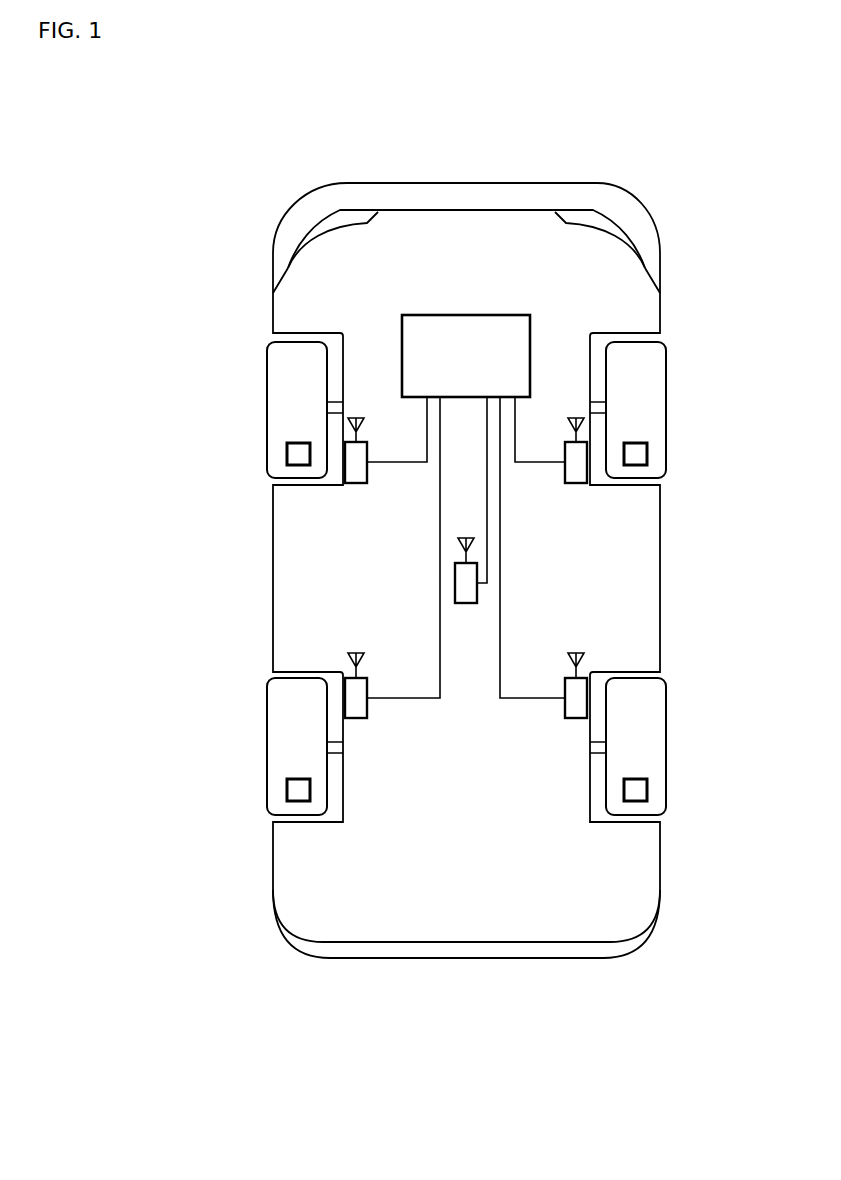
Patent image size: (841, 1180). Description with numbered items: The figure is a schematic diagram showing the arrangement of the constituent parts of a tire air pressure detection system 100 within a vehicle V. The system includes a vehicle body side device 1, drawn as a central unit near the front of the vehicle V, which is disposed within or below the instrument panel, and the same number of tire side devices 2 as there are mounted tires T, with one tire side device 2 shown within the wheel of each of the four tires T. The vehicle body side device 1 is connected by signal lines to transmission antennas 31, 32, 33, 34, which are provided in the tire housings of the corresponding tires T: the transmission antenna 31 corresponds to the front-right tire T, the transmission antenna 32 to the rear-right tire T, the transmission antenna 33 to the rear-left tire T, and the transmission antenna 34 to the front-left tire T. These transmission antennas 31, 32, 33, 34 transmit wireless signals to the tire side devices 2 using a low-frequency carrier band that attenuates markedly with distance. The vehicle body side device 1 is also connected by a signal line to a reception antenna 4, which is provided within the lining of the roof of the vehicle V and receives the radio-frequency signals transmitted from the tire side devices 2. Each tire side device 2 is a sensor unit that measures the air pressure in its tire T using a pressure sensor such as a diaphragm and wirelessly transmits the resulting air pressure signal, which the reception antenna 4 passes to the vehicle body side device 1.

The tire air pressure detection system 100 is at (252, 98).
The vehicle V is at (512, 183).
The vehicle body side device 1 is at (442, 315).
The tire T is at (267, 381).
The tire side device 2 is at (287, 455).
The transmission antenna 31 is at (578, 483).
The transmission antenna 32 is at (580, 718).
The transmission antenna 33 is at (353, 718).
The transmission antenna 34 is at (353, 483).
The reception antenna 4 is at (477, 590).